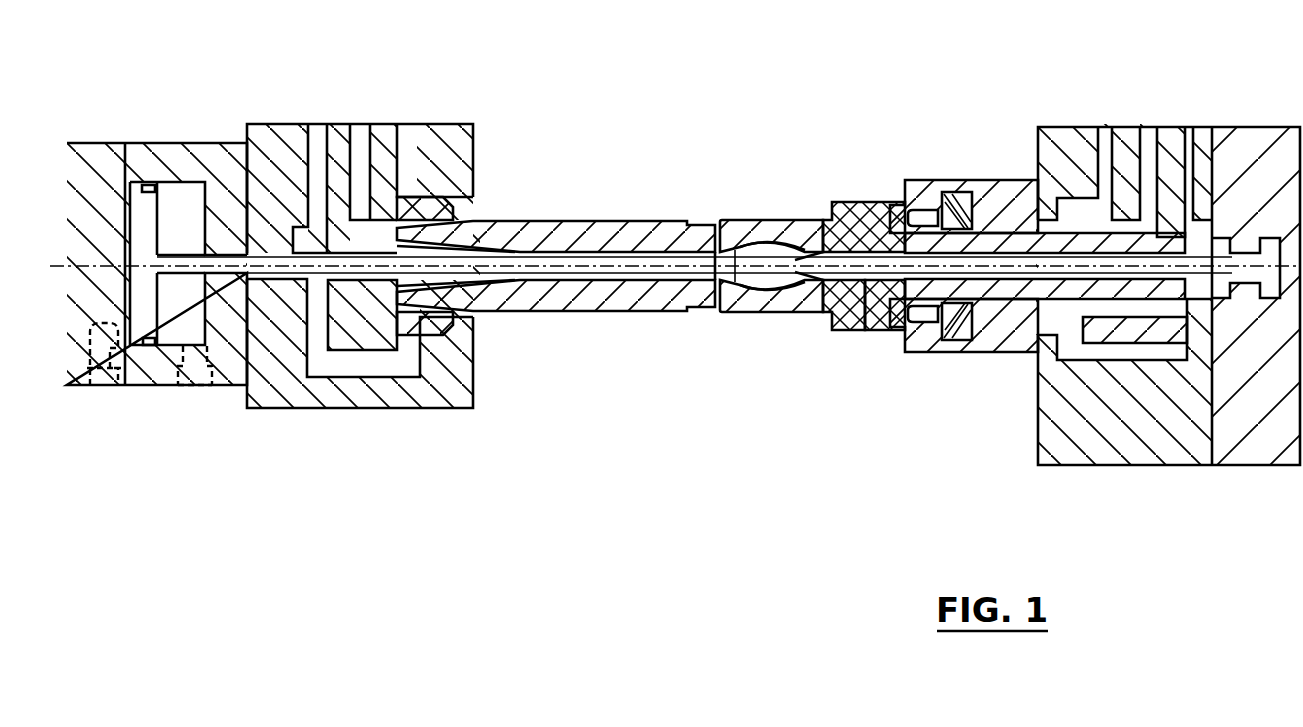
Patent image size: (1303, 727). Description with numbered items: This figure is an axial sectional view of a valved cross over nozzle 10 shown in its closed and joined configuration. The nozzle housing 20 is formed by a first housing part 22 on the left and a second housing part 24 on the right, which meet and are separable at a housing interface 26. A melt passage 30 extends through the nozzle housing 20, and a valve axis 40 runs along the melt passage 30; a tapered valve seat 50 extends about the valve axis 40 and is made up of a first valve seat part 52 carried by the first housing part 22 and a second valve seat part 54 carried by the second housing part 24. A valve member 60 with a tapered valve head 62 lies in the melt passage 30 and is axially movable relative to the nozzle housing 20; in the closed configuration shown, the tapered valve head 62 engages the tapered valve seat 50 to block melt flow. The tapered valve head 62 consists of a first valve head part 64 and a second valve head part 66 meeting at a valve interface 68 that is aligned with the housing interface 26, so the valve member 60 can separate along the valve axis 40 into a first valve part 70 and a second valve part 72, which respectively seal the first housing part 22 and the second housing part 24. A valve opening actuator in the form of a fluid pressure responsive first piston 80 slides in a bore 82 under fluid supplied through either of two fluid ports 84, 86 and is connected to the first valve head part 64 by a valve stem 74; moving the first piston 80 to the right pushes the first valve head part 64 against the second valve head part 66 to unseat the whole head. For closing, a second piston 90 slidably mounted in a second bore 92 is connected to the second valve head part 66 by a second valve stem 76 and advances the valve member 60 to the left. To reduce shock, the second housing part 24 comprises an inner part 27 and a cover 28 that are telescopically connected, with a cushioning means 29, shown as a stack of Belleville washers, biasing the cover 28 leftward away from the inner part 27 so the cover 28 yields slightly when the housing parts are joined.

The valved cross over nozzle 10 is at (500, 541).
The nozzle housing 20 is at (755, 422).
The first housing part 22 is at (636, 316).
The second housing part 24 is at (727, 316).
The housing interface 26 is at (716, 300).
The inner part 27 is at (1006, 232).
The cover 28 is at (820, 236).
The cushioning means 29 is at (978, 232).
The melt passage 30 is at (540, 252).
The valve axis 40 is at (628, 262).
The tapered valve seat 50 is at (788, 74).
The first valve seat part 52 is at (735, 245).
The second valve seat part 54 is at (757, 245).
The valve member 60 is at (845, 228).
The tapered valve head 62 is at (780, 412).
The first valve head part 64 is at (790, 312).
The second valve head part 66 is at (846, 330).
The valve interface 68 is at (736, 258).
The first valve part 70 is at (593, 276).
The second valve part 72 is at (1003, 293).
The valve stem 74 is at (370, 240).
The second valve stem 76 is at (1165, 272).
The first piston 80 is at (142, 197).
The bore 82 is at (190, 218).
The fluid port 84 is at (95, 388).
The fluid port 86 is at (193, 388).
The second piston 90 is at (1222, 245).
The second bore 92 is at (1275, 255).